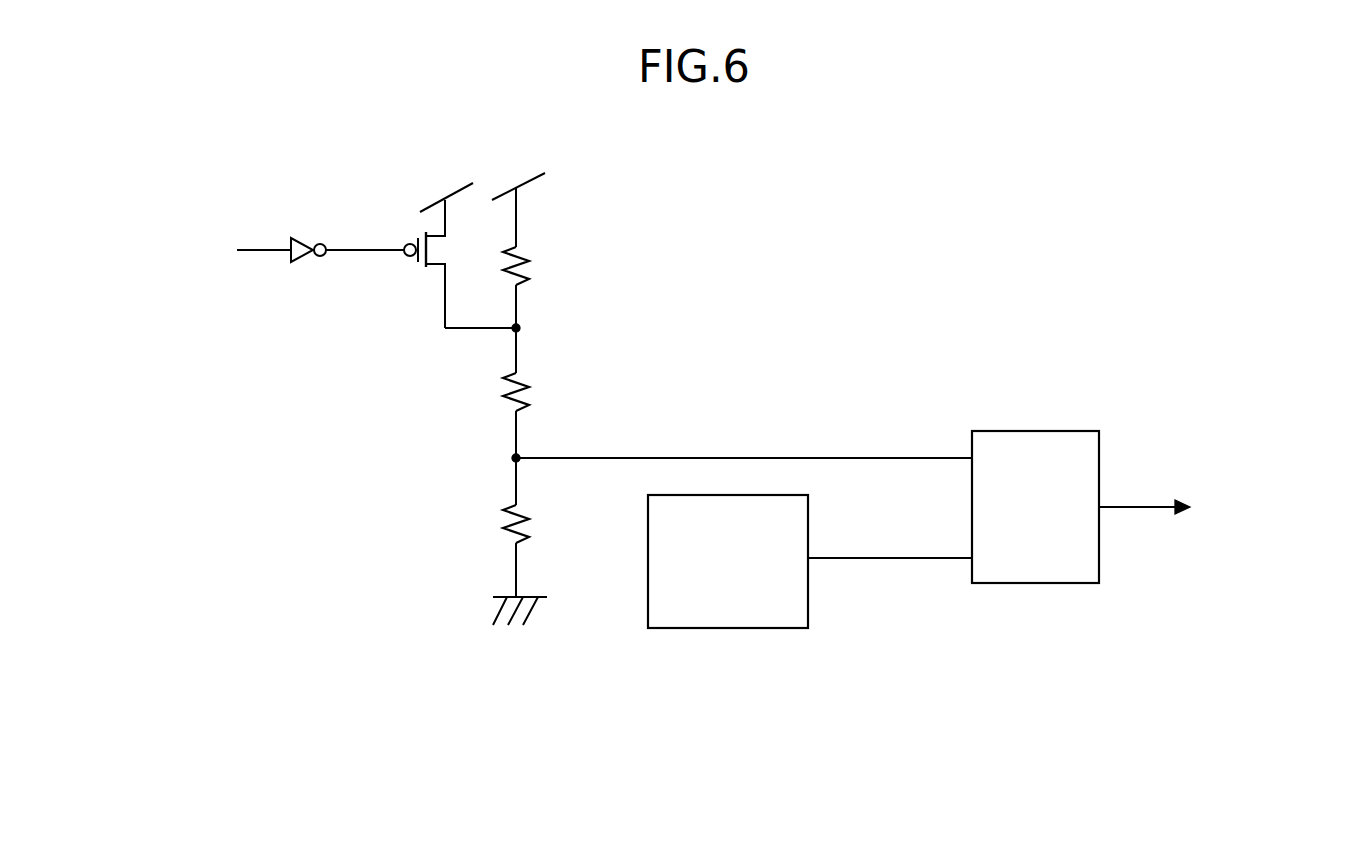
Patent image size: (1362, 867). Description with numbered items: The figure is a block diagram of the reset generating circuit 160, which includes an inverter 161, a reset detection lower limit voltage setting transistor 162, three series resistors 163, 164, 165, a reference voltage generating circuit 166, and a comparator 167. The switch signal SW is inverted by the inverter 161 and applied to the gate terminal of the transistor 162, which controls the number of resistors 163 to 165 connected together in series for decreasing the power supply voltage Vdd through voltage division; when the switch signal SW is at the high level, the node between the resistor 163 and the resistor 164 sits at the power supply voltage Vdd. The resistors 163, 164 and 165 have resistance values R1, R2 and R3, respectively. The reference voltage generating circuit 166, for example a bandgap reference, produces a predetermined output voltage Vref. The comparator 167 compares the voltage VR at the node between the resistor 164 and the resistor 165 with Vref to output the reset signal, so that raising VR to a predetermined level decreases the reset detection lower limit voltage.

The reset generating circuit 160 is at (1012, 140).
The inverter 161 is at (292, 238).
The reset detection lower limit voltage setting transistor 162 is at (426, 232).
The resistor 163 is at (598, 264).
The resistor 164 is at (598, 395).
The resistor 165 is at (598, 508).
The reference voltage generating circuit 166 is at (725, 628).
The comparator 167 is at (1036, 583).